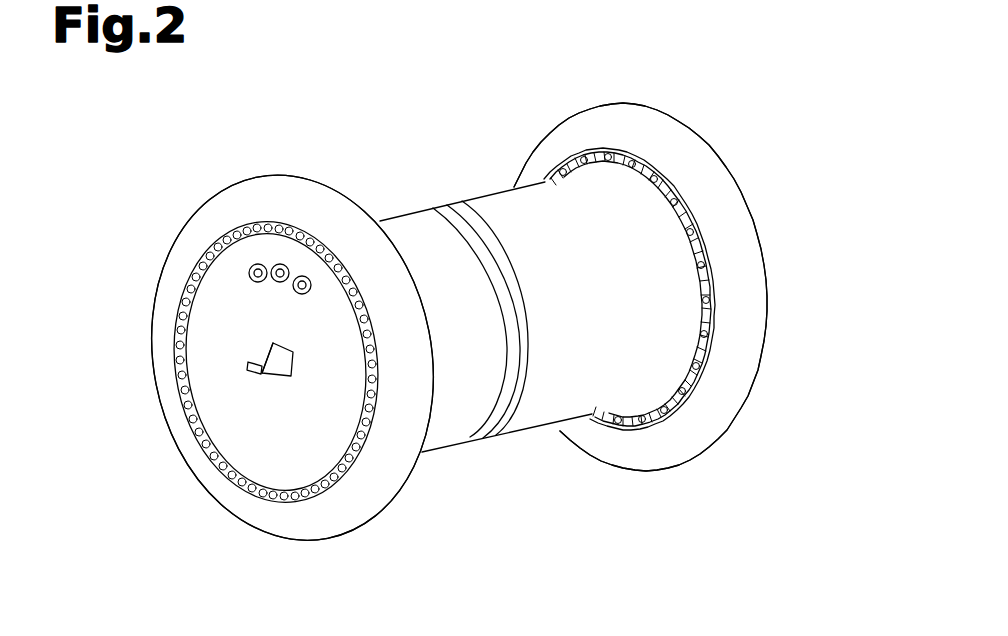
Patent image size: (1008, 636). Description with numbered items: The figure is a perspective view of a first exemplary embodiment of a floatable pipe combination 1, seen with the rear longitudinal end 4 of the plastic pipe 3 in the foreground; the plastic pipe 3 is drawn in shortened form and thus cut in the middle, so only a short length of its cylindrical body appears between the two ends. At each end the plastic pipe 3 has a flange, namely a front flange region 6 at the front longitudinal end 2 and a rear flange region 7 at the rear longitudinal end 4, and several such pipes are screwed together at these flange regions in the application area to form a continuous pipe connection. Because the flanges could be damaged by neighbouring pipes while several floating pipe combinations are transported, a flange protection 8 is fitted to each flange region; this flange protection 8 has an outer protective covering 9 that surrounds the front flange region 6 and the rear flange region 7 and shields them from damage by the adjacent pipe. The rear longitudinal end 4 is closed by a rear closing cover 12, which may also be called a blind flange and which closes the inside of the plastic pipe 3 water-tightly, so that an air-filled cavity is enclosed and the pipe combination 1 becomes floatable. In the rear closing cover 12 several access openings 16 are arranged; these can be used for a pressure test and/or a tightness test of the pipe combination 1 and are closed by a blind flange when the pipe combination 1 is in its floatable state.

The floatable pipe combination 1 is at (777, 139).
The front longitudinal end 2 is at (793, 261).
The plastic pipe 3 is at (497, 213).
The rear longitudinal end 4 is at (152, 239).
The front flange region 6 is at (722, 106).
The rear flange region 7 is at (297, 165).
The flange protection 8 is at (128, 336).
The outer protective covering 9 is at (229, 207).
The rear closing cover 12 is at (210, 383).
The access openings 16 is at (297, 273).